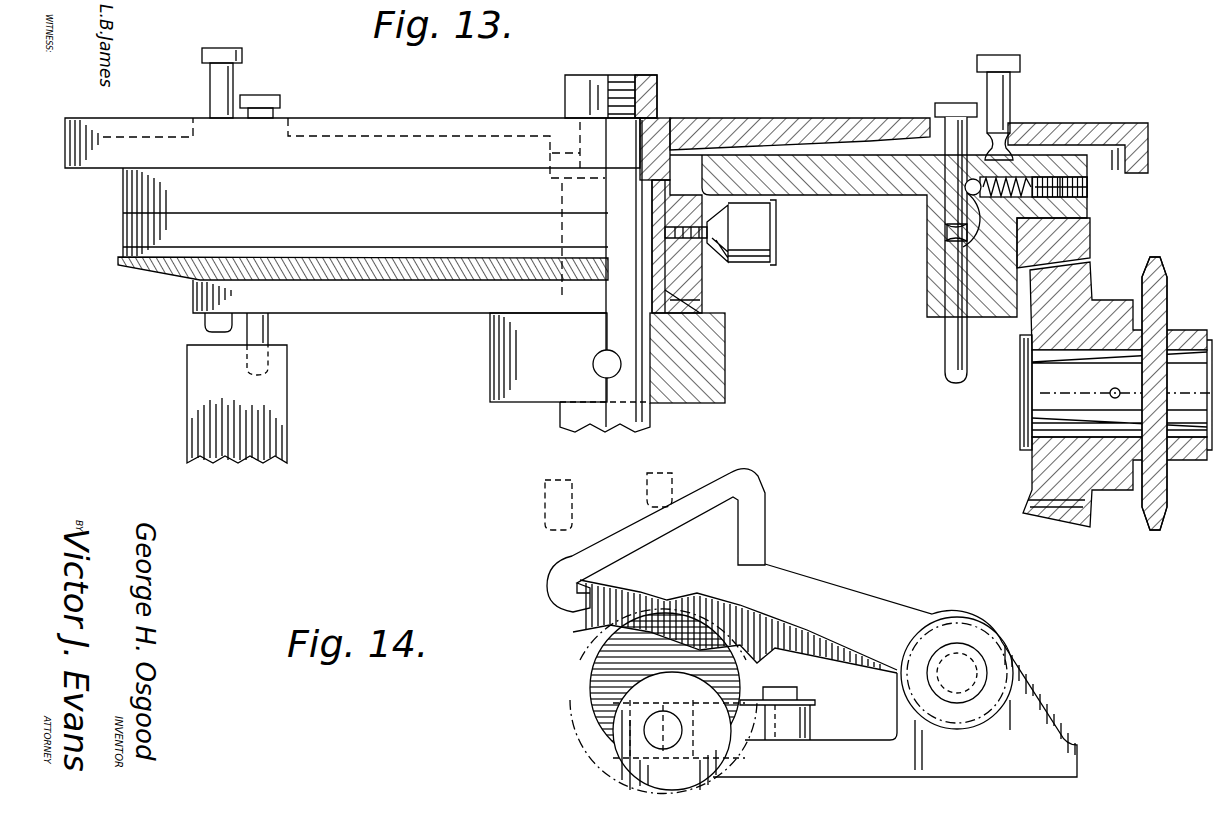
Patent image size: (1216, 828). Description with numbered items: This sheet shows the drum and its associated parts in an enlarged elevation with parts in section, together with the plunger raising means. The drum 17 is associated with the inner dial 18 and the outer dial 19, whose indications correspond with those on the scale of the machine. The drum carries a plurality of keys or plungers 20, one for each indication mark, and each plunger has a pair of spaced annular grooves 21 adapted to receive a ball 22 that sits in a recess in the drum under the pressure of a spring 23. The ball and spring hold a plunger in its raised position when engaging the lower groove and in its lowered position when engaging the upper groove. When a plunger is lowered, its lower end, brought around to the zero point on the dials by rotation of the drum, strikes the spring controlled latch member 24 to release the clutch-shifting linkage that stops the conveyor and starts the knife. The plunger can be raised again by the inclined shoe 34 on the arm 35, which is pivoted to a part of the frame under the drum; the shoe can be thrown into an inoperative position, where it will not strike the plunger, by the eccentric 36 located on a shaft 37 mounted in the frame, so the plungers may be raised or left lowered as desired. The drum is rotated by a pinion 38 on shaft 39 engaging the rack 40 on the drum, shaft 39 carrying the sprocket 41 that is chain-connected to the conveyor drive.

In FIG. 13, the drum 17 is at (820, 170).
In FIG. 13, the inner dial 18 is at (793, 100).
In FIG. 13, the outer dial 19 is at (1100, 125).
In FIG. 13, the keys or plungers 20 is at (270, 95).
In FIG. 14, the keys or plungers 20 is at (647, 487).
In FIG. 13, the annular grooves 21 is at (947, 216).
In FIG. 13, the ball 22 is at (965, 243).
In FIG. 13, the spring 23 is at (1020, 178).
In FIG. 13, the spring controlled latch member 24 is at (273, 396).
In FIG. 14, the inclined shoe 34 is at (575, 563).
In FIG. 14, the arm 35 is at (845, 605).
In FIG. 14, the eccentric 36 is at (620, 645).
In FIG. 14, the shaft 37 is at (663, 731).
In FIG. 13, the pinion 38 is at (1048, 470).
In FIG. 13, the shaft 39 is at (1043, 401).
In FIG. 13, the rack 40 is at (415, 280).
In FIG. 13, the sprocket 41 is at (1163, 268).